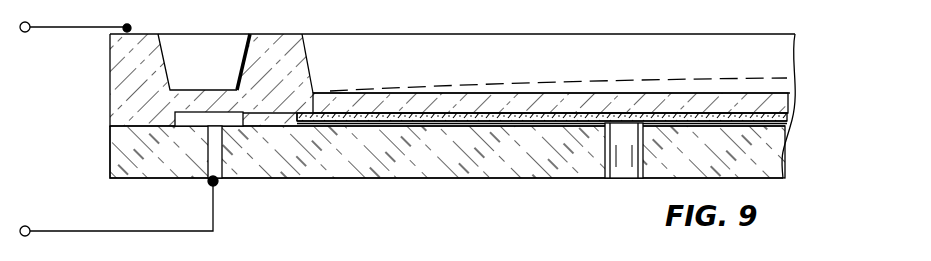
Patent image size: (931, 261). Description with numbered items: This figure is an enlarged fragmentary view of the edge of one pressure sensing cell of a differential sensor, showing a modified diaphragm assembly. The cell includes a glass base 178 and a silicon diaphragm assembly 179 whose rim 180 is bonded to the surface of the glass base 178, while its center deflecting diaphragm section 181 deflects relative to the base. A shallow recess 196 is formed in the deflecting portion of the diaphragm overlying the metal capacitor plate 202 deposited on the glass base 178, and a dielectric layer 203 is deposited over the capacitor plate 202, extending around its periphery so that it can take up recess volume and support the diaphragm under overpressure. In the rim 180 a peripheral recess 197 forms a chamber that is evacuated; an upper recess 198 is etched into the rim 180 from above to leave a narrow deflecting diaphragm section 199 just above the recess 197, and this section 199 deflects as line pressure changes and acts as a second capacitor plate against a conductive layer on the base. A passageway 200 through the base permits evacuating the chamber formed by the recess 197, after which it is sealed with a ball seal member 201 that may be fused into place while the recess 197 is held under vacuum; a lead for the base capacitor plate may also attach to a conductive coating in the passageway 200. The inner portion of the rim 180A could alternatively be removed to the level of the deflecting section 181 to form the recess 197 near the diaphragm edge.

The glass base 178 is at (477, 152).
The diaphragm assembly 179 is at (525, 93).
The rim 180 is at (128, 74).
The inner portion of the rim 180A is at (283, 71).
The deflecting diaphragm section 181 is at (710, 93).
The shallow recess 196 is at (317, 117).
The recess 197 is at (197, 117).
The upper recess 198 is at (187, 63).
The deflecting diaphragm section 199 is at (217, 102).
The passageway 200 is at (215, 151).
The ball seal member 201 is at (218, 185).
The capacitor plate 202 is at (577, 130).
The dielectric layer 203 is at (615, 110).